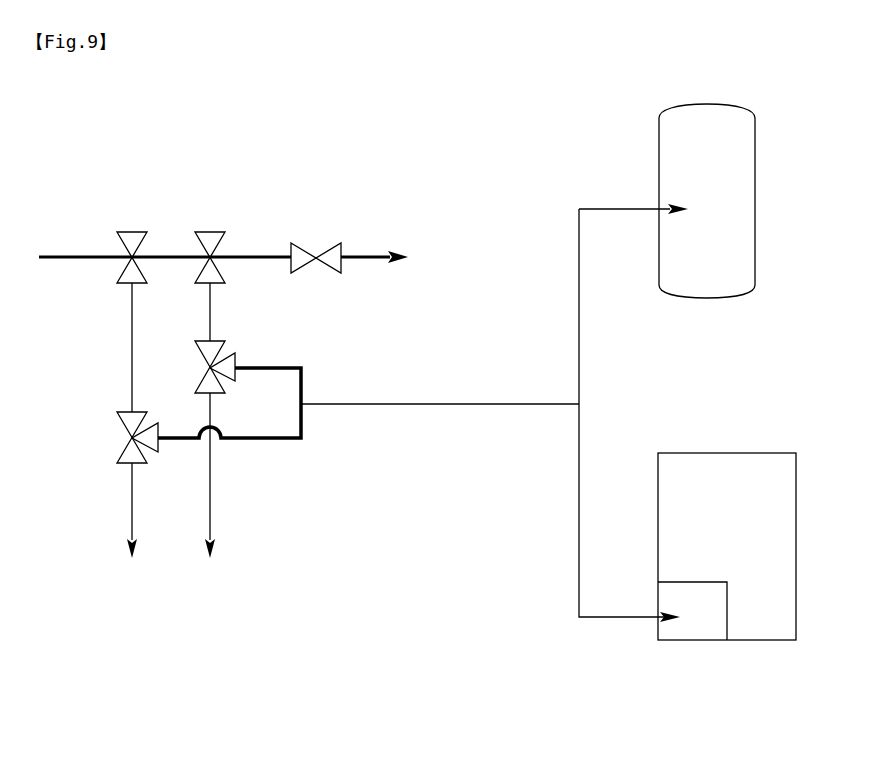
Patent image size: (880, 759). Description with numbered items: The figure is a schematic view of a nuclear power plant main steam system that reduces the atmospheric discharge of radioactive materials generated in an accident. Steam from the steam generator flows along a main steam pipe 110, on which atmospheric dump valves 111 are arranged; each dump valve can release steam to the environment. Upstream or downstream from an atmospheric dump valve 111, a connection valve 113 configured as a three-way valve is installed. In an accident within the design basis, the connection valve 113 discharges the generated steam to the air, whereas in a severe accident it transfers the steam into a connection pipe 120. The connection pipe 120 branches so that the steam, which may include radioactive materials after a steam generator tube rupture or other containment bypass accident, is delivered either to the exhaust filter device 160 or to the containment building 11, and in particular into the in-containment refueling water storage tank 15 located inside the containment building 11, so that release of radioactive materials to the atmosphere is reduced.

The main pipe / exhaust line 110 is at (64, 255).
The atmospheric dump valve 111 is at (132, 231).
The connection valve 113 is at (228, 350).
The connection pipe 120 is at (408, 405).
The exhaust filter device 160 is at (756, 177).
The containment building 11 is at (797, 519).
The in-containment refueling water storage tank 15 is at (704, 627).